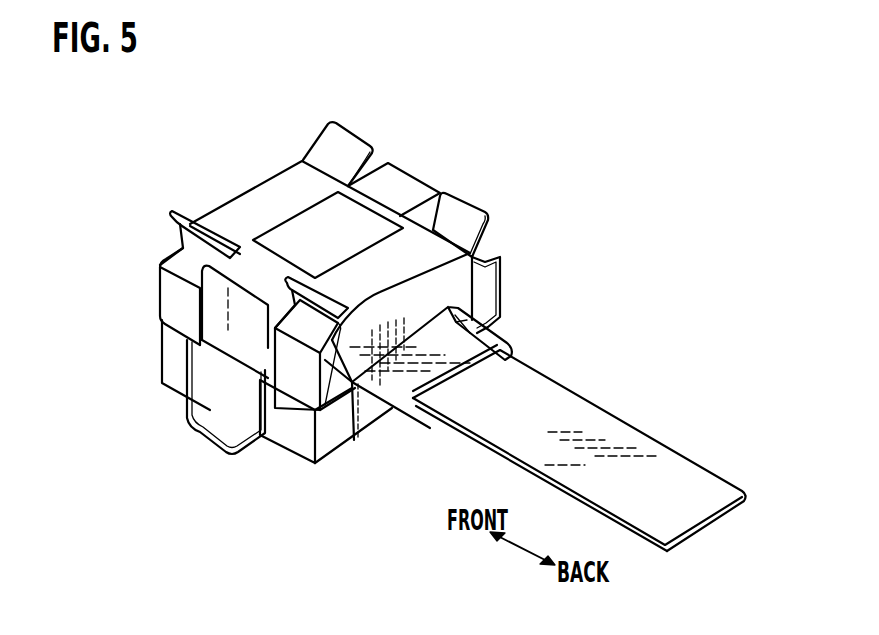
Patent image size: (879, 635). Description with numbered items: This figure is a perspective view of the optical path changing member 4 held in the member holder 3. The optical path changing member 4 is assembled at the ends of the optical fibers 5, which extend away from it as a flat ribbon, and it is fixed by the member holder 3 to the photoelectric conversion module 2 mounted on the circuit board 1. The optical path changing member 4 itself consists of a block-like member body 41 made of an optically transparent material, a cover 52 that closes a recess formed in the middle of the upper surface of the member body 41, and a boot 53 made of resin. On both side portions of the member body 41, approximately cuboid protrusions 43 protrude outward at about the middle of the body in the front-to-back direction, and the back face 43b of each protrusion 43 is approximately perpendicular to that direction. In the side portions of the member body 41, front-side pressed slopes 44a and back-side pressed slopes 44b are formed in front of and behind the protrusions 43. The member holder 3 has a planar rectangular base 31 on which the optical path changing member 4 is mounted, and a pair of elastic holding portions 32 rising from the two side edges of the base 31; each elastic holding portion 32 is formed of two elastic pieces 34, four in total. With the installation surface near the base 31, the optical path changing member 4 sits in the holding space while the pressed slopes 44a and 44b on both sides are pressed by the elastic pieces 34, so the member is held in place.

The circuit board 1 is at (340, 537).
The photoelectric conversion module 2 is at (337, 437).
The member holder 3 is at (505, 225).
The optical path changing member 4 is at (428, 158).
The optical fibers 5 is at (622, 422).
The base 31 is at (357, 400).
The elastic holding portions 32 is at (418, 72).
The elastic pieces 34 is at (342, 143).
The member body 41 is at (280, 182).
The protrusions 43 is at (437, 200).
The back face of protrusion 43b is at (255, 347).
The front-side pressed slopes 44a is at (185, 246).
The back-side pressed slopes 44b is at (350, 307).
The cover 52 is at (320, 222).
The boot 53 is at (488, 332).